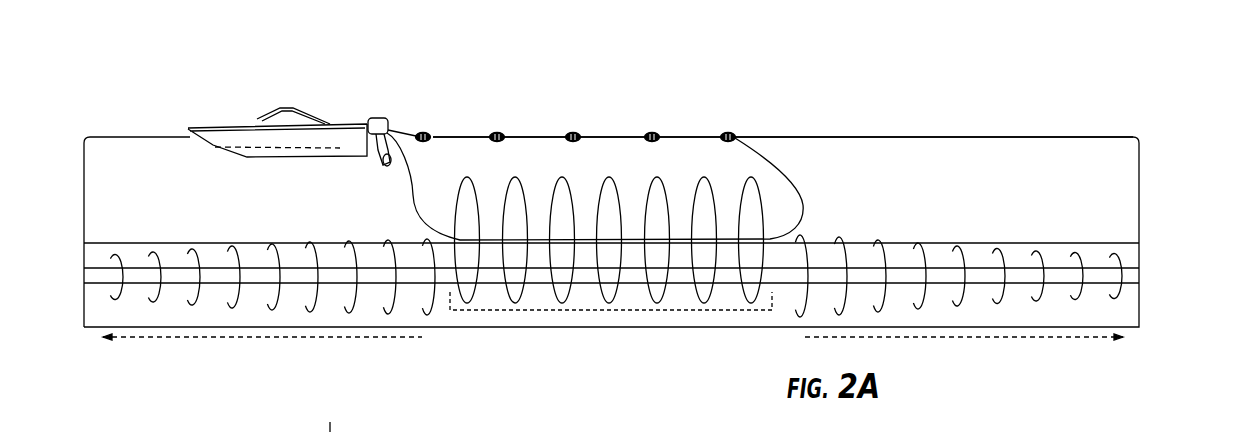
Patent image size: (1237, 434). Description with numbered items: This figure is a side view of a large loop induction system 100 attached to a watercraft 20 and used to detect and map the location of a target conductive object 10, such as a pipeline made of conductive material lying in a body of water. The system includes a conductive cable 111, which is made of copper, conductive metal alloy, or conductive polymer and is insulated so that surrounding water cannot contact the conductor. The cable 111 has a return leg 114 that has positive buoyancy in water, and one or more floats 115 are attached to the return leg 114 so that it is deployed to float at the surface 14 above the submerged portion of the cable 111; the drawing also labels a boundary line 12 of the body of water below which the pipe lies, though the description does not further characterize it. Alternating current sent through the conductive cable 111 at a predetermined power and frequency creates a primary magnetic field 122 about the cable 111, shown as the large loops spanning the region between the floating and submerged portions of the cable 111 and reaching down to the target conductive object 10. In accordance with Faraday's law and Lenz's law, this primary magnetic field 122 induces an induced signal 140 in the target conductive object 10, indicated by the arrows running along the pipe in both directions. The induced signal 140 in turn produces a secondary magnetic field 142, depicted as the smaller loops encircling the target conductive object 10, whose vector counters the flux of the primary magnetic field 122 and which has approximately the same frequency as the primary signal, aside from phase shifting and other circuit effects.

The target conductive object 10 is at (1139, 276).
The channel bed or conduit 12 is at (1005, 243).
The surface 14 is at (1020, 137).
The watercraft 20 is at (328, 122).
The large loop induction system 100 is at (706, 78).
The conductive cable 111 is at (805, 150).
The return leg 114 is at (325, 410).
The floats 115 is at (726, 131).
The primary magnetic field 122 is at (610, 310).
The induced signal 140 is at (613, 351).
The secondary magnetic field 142 is at (233, 243).